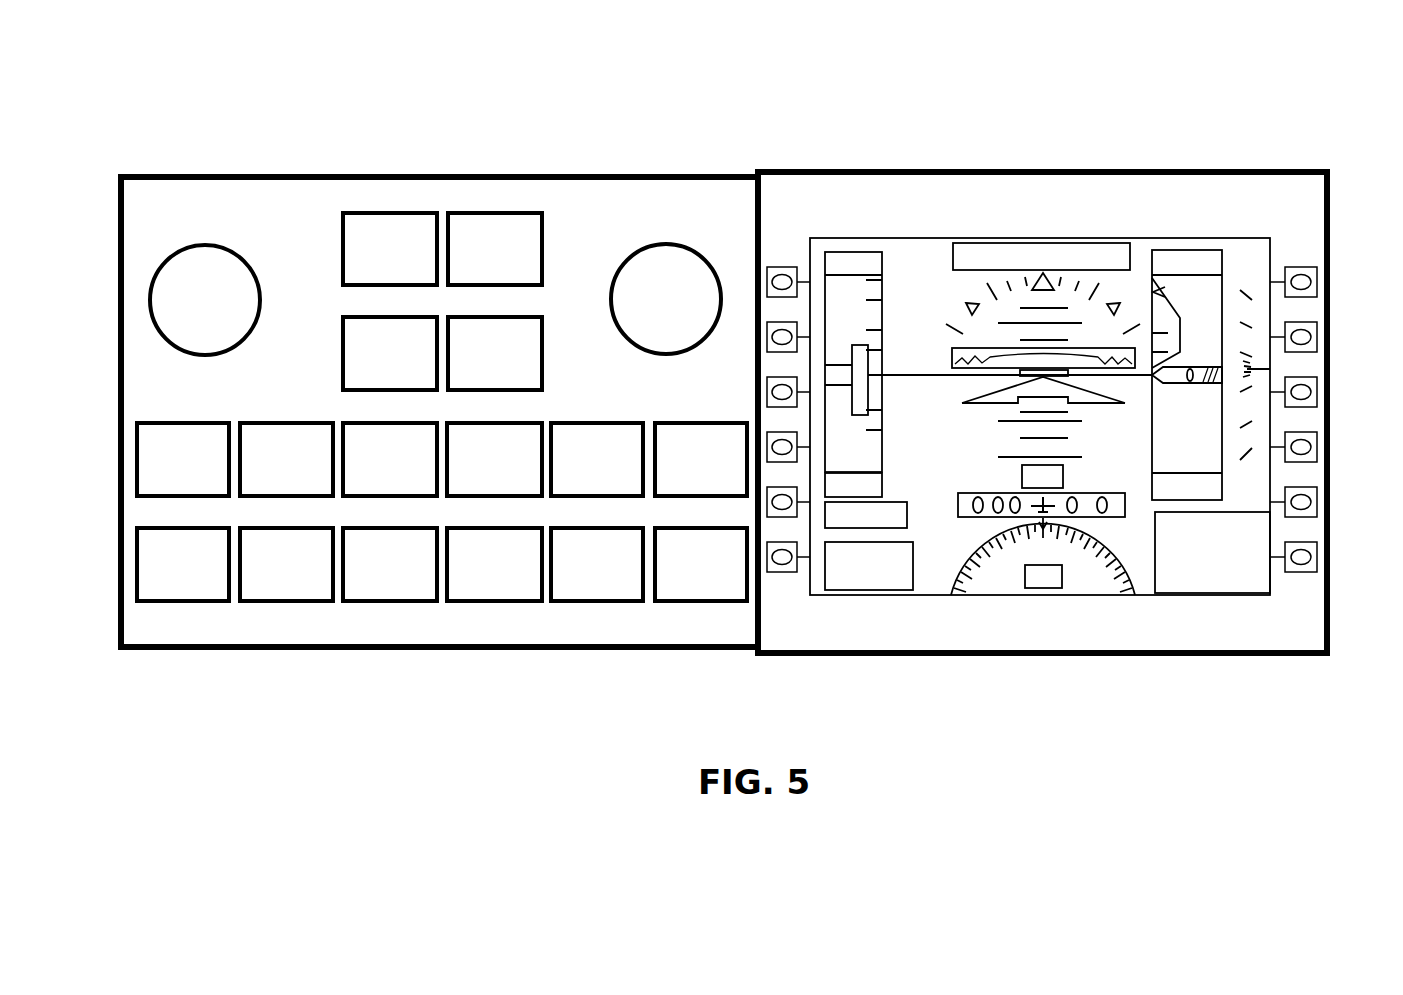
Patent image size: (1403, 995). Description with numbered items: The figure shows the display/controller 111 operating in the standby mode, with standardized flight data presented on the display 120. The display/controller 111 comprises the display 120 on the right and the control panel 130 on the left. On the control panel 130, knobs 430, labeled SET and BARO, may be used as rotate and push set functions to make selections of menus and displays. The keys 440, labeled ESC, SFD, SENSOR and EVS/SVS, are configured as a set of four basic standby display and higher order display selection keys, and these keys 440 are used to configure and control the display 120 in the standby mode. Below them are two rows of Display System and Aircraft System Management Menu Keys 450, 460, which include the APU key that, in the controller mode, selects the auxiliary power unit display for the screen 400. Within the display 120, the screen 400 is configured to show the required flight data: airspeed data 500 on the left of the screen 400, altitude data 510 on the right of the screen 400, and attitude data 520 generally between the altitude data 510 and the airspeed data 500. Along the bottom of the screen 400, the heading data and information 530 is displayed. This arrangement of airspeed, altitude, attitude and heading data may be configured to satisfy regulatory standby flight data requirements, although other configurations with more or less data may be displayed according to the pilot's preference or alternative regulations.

The display/controller 111 is at (122, 135).
The control panel 130 is at (420, 615).
The display 120 is at (1282, 610).
The knob 430 is at (150, 300).
The keys 440 is at (343, 174).
The Display System and Aircraft System Management Menu Keys 450 is at (118, 422).
The Display System and Aircraft System Management Menu Keys 460 is at (118, 527).
The display screen 400 is at (1155, 238).
The airspeed data 500 is at (810, 238).
The attitude data 520 is at (1142, 238).
The heading data and information 530 is at (810, 238).
The altitude data 510 is at (1245, 248).